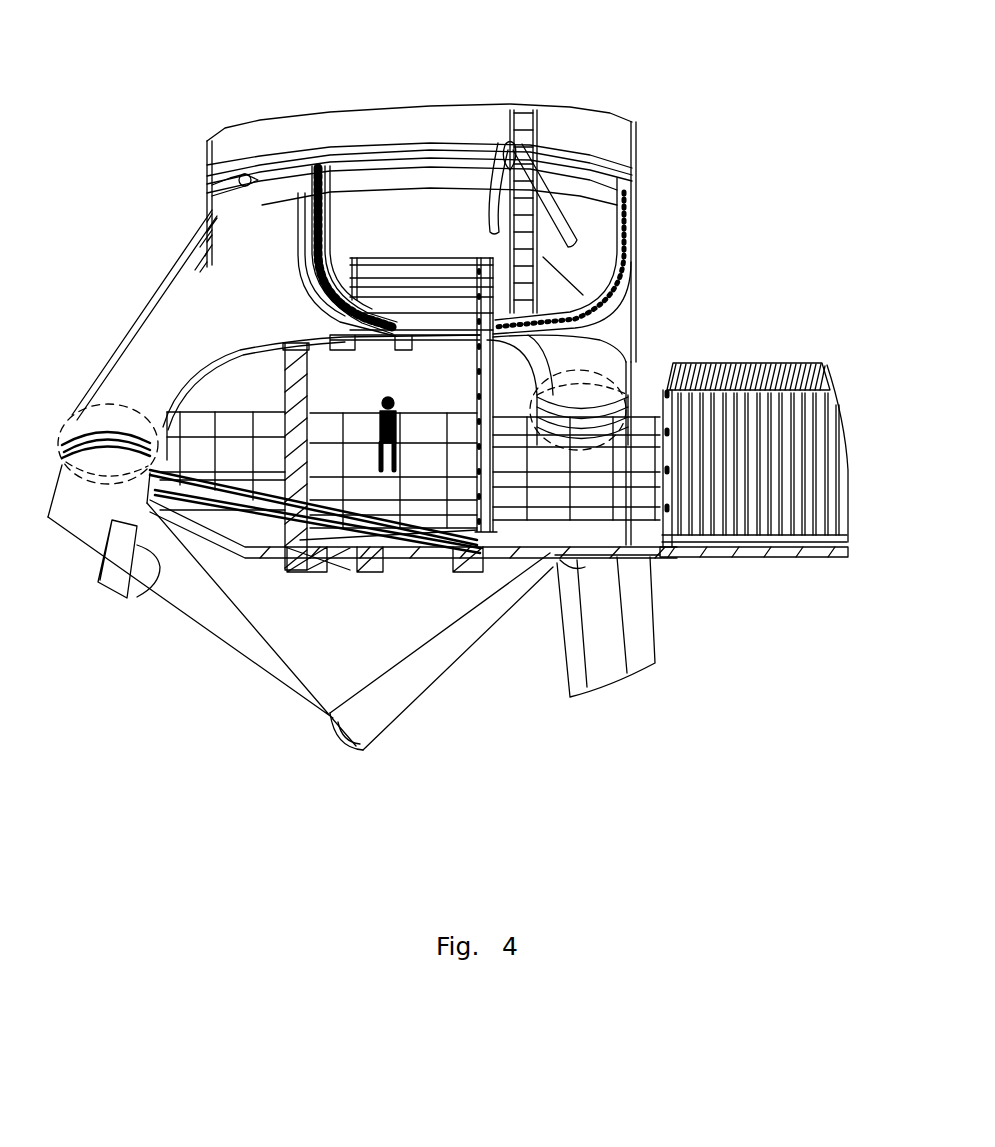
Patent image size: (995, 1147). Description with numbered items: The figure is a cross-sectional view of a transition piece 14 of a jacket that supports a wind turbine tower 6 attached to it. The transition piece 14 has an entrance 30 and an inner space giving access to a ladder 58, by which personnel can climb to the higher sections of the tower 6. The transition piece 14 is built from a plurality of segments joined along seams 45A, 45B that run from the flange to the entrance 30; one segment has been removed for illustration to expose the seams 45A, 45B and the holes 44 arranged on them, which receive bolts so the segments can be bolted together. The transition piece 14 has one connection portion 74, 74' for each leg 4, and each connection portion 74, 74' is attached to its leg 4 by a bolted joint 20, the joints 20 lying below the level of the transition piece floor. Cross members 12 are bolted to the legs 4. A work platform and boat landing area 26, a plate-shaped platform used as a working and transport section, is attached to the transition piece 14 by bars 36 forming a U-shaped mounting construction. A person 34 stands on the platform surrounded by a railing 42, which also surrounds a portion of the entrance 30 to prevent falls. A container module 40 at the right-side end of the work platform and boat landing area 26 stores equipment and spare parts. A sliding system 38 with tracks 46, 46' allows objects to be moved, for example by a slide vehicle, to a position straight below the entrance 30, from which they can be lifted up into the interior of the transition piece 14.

The leg 4 is at (78, 535).
The wind turbine tower 6 is at (207, 152).
The cross member 12 is at (172, 625).
The transition piece 14 is at (632, 312).
The joint 20 is at (135, 407).
The work platform and boat landing area 26 is at (207, 537).
The entrance 30 is at (433, 285).
The person 34 is at (398, 418).
The bar 36 is at (328, 508).
The sliding system 38 is at (270, 464).
The container module 40 is at (748, 363).
The railing 42 is at (358, 262).
The hole 44 is at (628, 210).
The seam 45A is at (326, 210).
The seam 45B is at (632, 243).
The track 46 is at (313, 533).
The track 46' is at (317, 546).
The ladder 58 is at (510, 128).
The connection portion 74 is at (594, 429).
The connection portion 74' is at (144, 315).